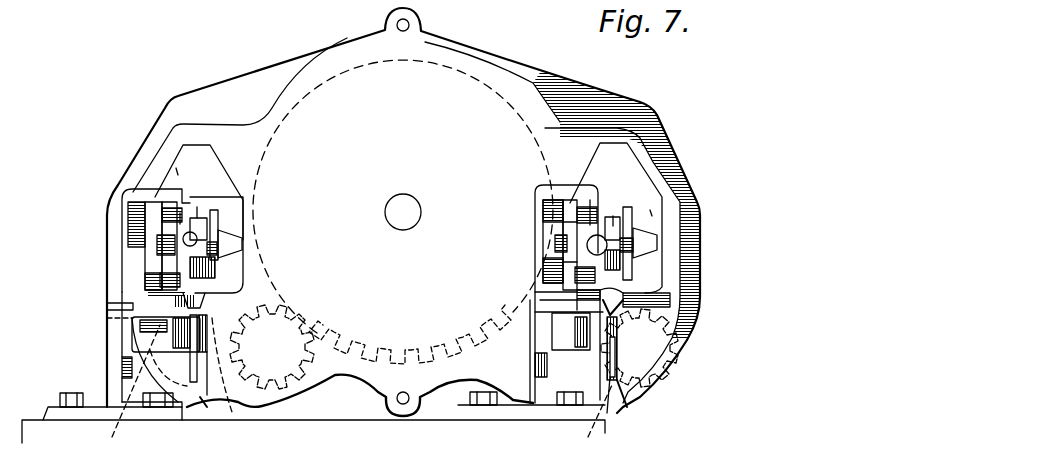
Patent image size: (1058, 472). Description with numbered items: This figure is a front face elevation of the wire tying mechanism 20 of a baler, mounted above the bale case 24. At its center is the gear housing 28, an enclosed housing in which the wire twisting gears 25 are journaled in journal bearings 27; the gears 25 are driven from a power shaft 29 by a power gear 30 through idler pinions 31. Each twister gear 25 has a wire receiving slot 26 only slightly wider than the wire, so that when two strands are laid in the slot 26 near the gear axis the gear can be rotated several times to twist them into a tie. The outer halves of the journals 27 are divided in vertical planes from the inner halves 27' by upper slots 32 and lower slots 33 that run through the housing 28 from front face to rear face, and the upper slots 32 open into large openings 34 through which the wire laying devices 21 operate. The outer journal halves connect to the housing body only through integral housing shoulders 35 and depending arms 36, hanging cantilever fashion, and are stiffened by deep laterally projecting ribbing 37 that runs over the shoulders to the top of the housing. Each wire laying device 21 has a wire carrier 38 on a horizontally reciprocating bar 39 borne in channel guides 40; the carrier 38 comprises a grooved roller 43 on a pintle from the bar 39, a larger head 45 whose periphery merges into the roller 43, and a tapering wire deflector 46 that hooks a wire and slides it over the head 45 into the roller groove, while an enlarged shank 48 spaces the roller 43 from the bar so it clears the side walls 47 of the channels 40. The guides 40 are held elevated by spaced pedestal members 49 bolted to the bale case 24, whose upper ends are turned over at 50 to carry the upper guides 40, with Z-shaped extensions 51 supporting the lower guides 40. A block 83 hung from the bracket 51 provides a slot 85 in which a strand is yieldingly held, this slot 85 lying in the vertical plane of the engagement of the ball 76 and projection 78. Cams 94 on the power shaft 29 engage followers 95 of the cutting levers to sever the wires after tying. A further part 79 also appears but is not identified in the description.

The wire tying mechanism 20 is at (403, 196).
The wire laying device 21 is at (680, 140).
The bale case 24 is at (320, 398).
The wire twisting gear 25 is at (262, 395).
The wire receiving slot 26 is at (200, 397).
The journal bearing 27 is at (408, 385).
The inner half of journal 27' is at (429, 427).
The gear housing 28 is at (356, 83).
The power shaft 29 is at (405, 230).
The power gear 30 is at (360, 395).
The idler pinion 31 is at (275, 390).
The upper slot 32 is at (168, 282).
The lower slot 33 is at (203, 400).
The large opening 34 is at (177, 168).
The housing shoulder 35 is at (200, 128).
The depending arm 36 is at (124, 238).
The ribbing 37 is at (120, 192).
The wire carrier 38 is at (185, 210).
The reciprocating bar 39 is at (155, 225).
The channel guide 40 is at (130, 205).
The roller 43 is at (216, 225).
The head 45 is at (215, 264).
The wire deflector 46 is at (232, 238).
The side wall 47 is at (201, 204).
The enlarged shank 48 is at (150, 213).
The pedestal member 49 is at (110, 347).
The turned-over upper end 50 is at (143, 188).
The Z-shaped extension 51 is at (133, 308).
The ball 76 is at (562, 238).
The projection 78 is at (216, 246).
The spring 79 is at (160, 243).
The block 83 is at (143, 343).
The slot 85 is at (188, 296).
The cam 94 is at (205, 303).
The follower 95 is at (313, 446).